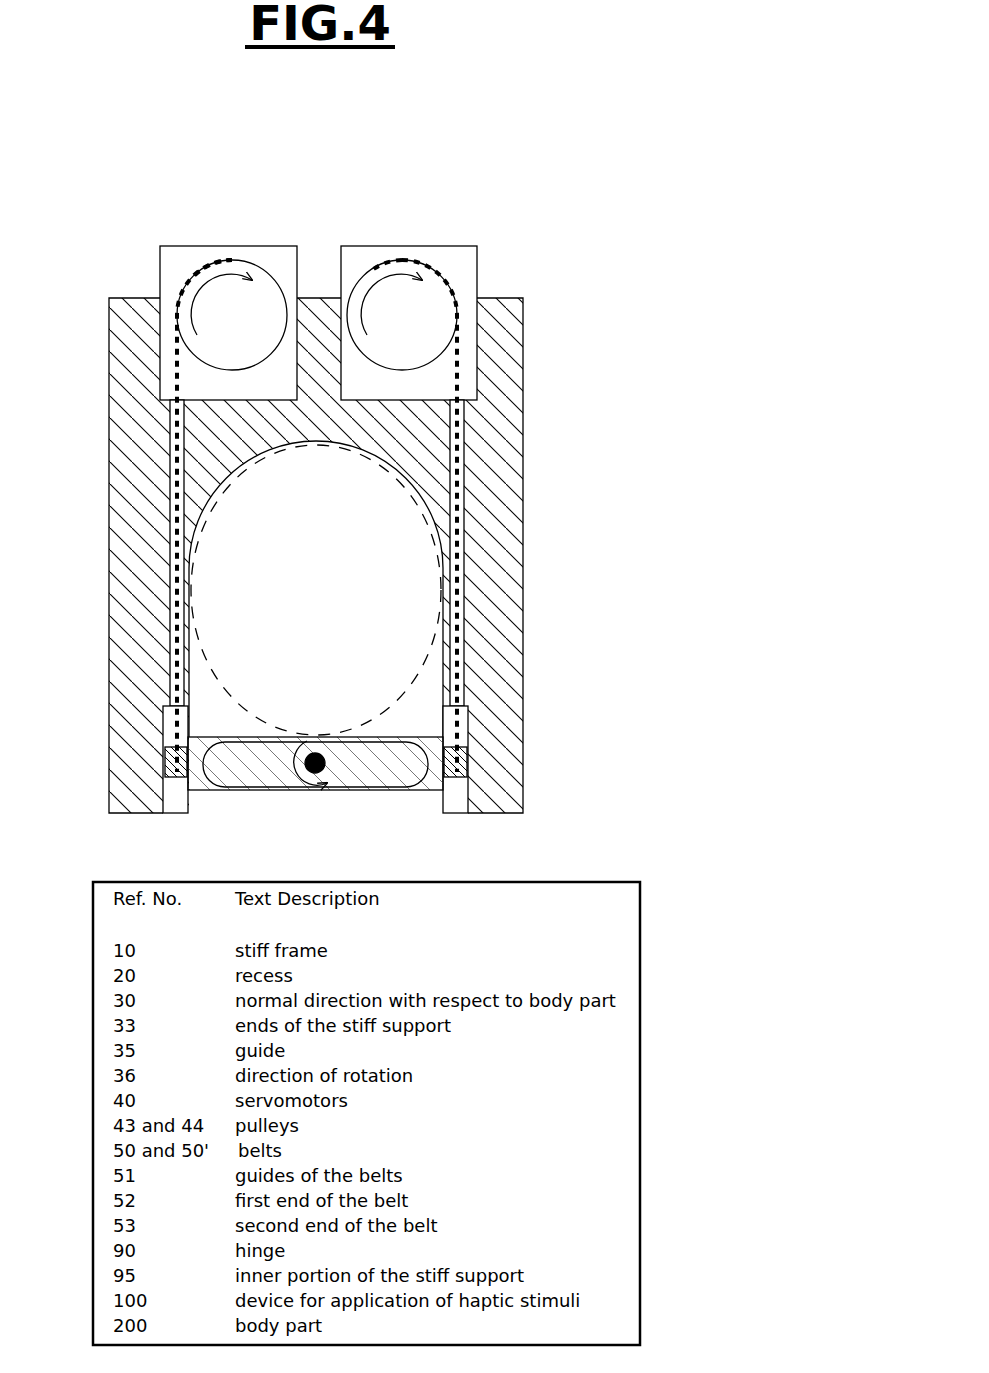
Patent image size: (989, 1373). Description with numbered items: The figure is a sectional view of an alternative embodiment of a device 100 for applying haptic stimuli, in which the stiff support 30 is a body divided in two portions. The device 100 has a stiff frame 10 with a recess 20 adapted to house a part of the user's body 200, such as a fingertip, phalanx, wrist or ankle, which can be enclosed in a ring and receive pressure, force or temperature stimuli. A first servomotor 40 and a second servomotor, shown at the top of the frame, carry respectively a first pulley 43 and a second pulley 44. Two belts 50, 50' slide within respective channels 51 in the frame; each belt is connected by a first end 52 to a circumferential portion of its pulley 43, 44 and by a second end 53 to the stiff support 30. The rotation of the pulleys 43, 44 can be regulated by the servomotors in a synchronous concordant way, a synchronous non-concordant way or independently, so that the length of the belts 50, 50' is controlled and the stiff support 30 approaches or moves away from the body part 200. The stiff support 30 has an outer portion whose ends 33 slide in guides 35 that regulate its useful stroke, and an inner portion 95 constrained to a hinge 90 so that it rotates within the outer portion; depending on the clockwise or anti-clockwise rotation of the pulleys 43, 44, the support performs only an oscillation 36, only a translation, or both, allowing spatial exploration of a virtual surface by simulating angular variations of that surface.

The stiff frame 10 is at (108, 322).
The recess 20 is at (196, 723).
The stiff support 30 is at (447, 745).
The ends of the stiff support 33 is at (180, 762).
The guides 35 is at (176, 806).
The oscillation 36 is at (293, 770).
The servomotor 40 is at (157, 254).
The first pulley 43 is at (258, 280).
The second pulley 44 is at (362, 265).
The belt 50 is at (485, 516).
The belt 50' is at (140, 516).
The channels 51 is at (168, 474).
The first end 52 is at (230, 262).
The second end 53 is at (395, 262).
The hinge 90 is at (312, 775).
The inner portion 95 is at (354, 790).
The device 100 is at (553, 250).
The user's body part 200 is at (390, 610).